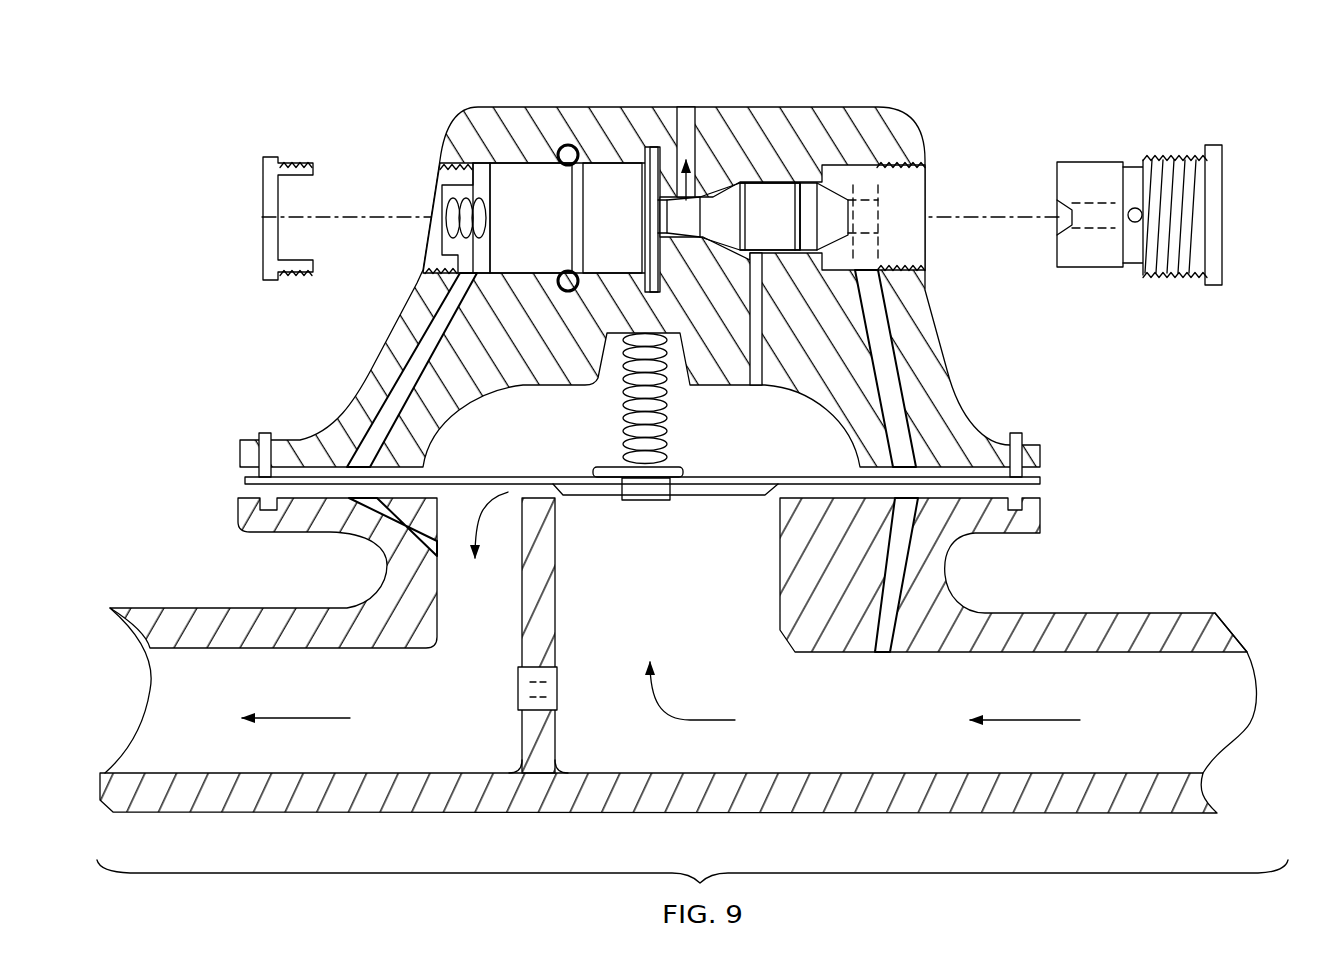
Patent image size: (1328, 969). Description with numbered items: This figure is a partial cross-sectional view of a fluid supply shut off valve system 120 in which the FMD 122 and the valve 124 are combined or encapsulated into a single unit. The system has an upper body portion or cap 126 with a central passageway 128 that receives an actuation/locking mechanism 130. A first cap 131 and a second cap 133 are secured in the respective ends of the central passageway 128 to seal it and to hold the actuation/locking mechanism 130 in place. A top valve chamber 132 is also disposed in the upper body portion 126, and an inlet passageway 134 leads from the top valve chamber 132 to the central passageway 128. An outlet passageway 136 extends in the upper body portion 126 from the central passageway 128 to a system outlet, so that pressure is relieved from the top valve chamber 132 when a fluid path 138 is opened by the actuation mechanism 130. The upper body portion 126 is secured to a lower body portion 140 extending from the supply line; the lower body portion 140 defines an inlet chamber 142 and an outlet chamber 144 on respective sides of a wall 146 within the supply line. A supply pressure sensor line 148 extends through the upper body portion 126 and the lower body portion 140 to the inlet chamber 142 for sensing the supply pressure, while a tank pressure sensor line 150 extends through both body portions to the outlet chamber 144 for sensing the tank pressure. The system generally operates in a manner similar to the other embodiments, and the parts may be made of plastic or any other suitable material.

The fluid supply shut off valve system 120 is at (757, 297).
The FMD 122 is at (665, 277).
The valve 124 is at (678, 604).
The upper body portion 126 is at (462, 126).
The central passageway 128 is at (778, 186).
The actuation/locking mechanism 130 is at (840, 147).
The first cap 131 is at (262, 217).
The top valve chamber 132 is at (523, 445).
The second cap 133 is at (1224, 228).
The inlet passageway 134 is at (758, 388).
The outlet passageway 136 is at (688, 112).
The fluid path 138 is at (741, 223).
The lower body portion 140 is at (945, 573).
The inlet chamber 142 is at (467, 704).
The outlet chamber 144 is at (683, 544).
The wall 146 is at (555, 597).
The supply pressure sensor line 148 is at (385, 407).
The tank pressure sensor line 150 is at (888, 338).